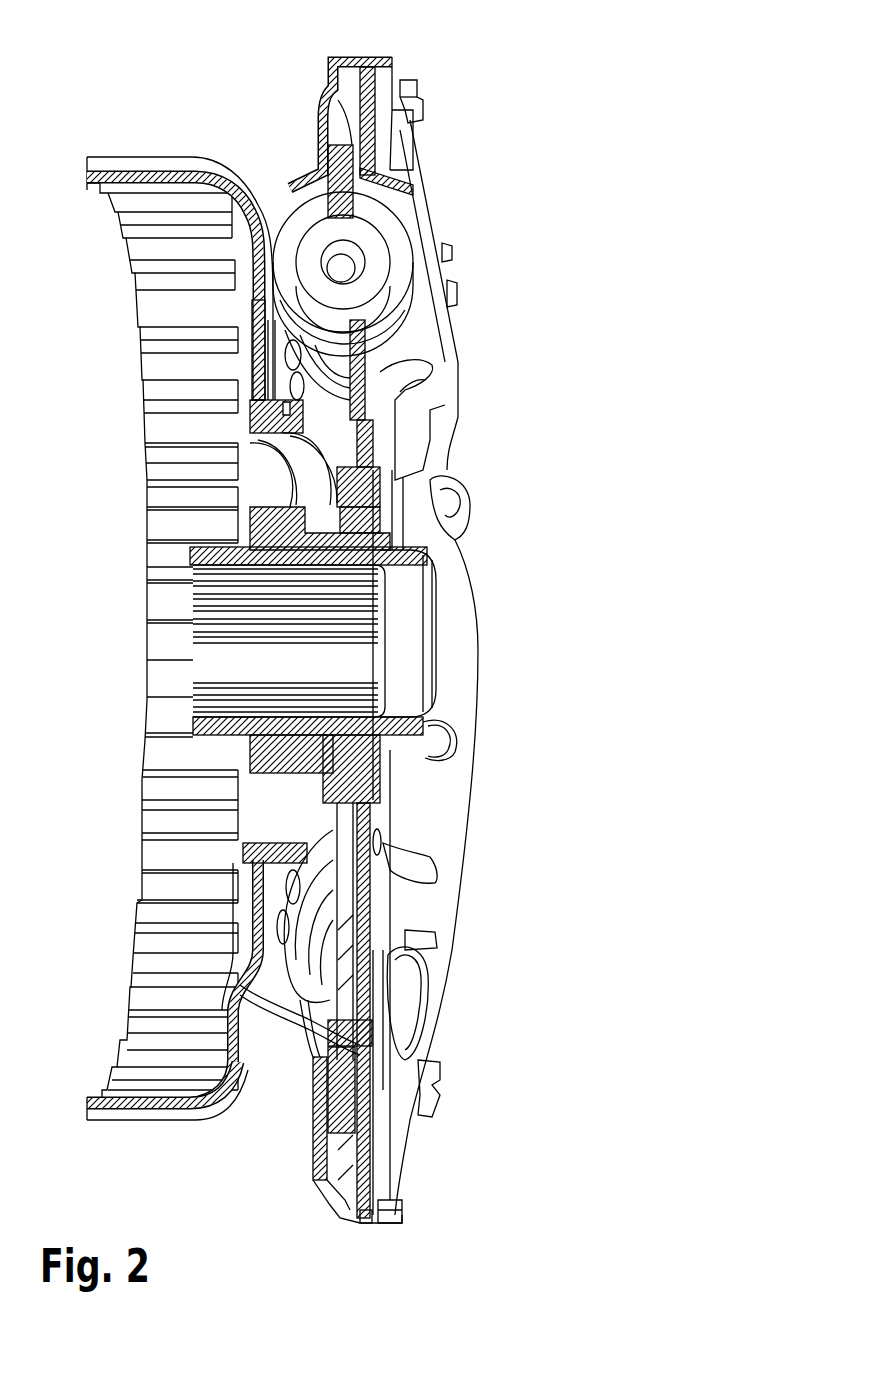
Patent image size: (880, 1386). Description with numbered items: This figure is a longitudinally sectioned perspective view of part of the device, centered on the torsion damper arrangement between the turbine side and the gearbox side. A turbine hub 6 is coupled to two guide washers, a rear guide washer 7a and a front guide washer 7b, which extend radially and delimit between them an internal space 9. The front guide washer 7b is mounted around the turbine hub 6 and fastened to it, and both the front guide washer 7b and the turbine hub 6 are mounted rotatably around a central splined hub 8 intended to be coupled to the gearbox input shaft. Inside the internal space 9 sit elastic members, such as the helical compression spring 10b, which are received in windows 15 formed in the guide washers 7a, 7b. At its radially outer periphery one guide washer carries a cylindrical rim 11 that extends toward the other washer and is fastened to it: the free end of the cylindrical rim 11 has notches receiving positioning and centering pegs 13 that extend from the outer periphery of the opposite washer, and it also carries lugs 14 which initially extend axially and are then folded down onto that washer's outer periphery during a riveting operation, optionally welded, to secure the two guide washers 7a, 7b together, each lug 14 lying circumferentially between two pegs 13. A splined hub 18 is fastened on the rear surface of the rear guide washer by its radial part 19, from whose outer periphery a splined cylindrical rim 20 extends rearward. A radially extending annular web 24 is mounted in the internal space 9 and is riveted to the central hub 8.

The turbine hub 6 is at (417, 533).
The rear guide washer 7a is at (370, 1170).
The front guide washer 7b is at (313, 1160).
The central splined hub 8 is at (415, 650).
The internal space 9 is at (326, 120).
The elastic member 10b is at (395, 292).
The cylindrical rim 11 is at (348, 58).
The positioning and centering pegs 13 is at (368, 1225).
The lugs 14 is at (418, 82).
The windows 15 is at (468, 383).
The splined hub 18 is at (140, 1008).
The radial part 19 is at (258, 378).
The splined cylindrical rim 20 is at (152, 170).
The annular web 24 is at (302, 1082).